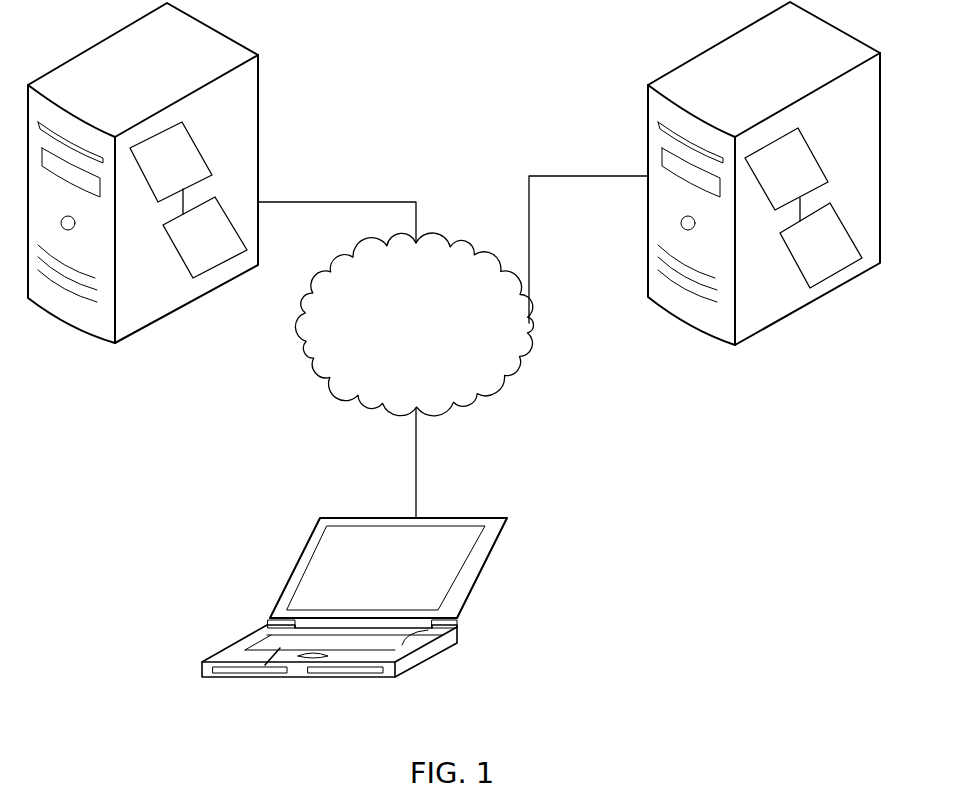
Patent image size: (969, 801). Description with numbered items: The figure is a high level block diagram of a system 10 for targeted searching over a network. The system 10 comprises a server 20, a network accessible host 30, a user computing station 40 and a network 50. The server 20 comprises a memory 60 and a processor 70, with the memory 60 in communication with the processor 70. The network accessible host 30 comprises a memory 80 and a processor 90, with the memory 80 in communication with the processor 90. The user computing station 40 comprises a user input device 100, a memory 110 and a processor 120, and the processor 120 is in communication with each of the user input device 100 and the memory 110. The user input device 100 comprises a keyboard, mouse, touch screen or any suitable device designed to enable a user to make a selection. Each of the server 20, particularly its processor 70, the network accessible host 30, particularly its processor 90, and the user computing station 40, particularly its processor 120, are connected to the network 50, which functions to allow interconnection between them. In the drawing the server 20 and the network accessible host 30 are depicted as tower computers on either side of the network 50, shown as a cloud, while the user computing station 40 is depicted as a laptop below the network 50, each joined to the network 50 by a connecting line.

The system 10 is at (416, 31).
The server 20 is at (233, 34).
The network accessible host 30 is at (705, 48).
The user computing station 40 is at (364, 618).
The network 50 is at (517, 352).
The memory 60 is at (177, 246).
The processor 70 is at (188, 130).
The memory 80 is at (793, 253).
The processor 90 is at (805, 135).
The user input device 100 is at (457, 626).
The memory 110 is at (362, 678).
The processor 120 is at (242, 677).